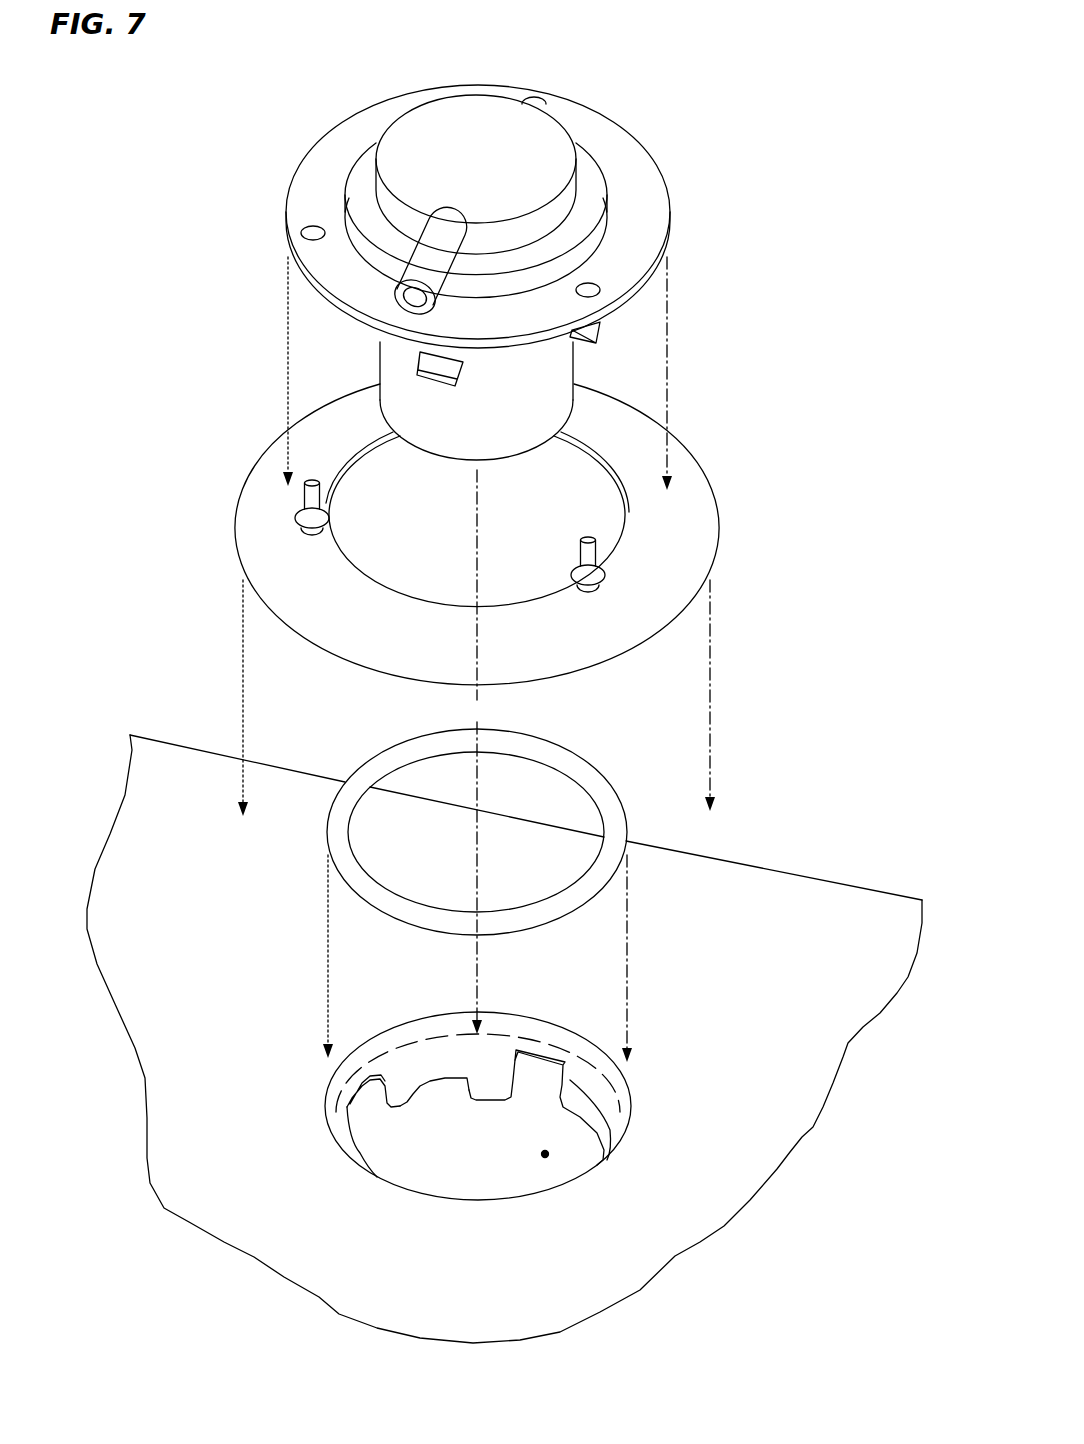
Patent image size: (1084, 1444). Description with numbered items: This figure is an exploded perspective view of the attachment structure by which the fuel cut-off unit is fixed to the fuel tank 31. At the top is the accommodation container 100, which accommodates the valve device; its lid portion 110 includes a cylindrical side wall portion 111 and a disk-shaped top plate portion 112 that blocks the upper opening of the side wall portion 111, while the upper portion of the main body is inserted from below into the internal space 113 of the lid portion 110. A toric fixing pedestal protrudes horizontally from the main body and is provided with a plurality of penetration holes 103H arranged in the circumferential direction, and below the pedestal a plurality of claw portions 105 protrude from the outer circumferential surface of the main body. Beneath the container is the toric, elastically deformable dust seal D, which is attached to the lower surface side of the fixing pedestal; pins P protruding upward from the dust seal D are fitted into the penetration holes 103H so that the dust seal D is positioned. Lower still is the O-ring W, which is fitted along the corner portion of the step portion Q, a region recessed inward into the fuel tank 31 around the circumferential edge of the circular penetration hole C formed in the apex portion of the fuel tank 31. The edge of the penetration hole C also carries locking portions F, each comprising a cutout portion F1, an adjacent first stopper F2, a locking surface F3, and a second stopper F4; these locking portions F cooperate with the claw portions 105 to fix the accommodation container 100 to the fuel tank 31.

The accommodation container 100 is at (683, 182).
The top plate portion 112 is at (435, 118).
The internal space 113 is at (610, 140).
The penetration holes 103H is at (598, 285).
The claw portions 105 is at (598, 338).
The lid portion 110 is at (368, 358).
The side wall portion 111 is at (443, 448).
The dust seal D is at (700, 506).
The pins P is at (589, 546).
The O-ring W is at (615, 796).
The fuel tank 31 is at (792, 906).
The step portion Q is at (405, 1040).
The locking portions F is at (475, 1186).
The cutout portion F1 is at (353, 1100).
The first stopper F2 is at (400, 1095).
The locking surface F3 is at (443, 1080).
The second stopper F4 is at (492, 1090).
The penetration hole C is at (545, 1154).